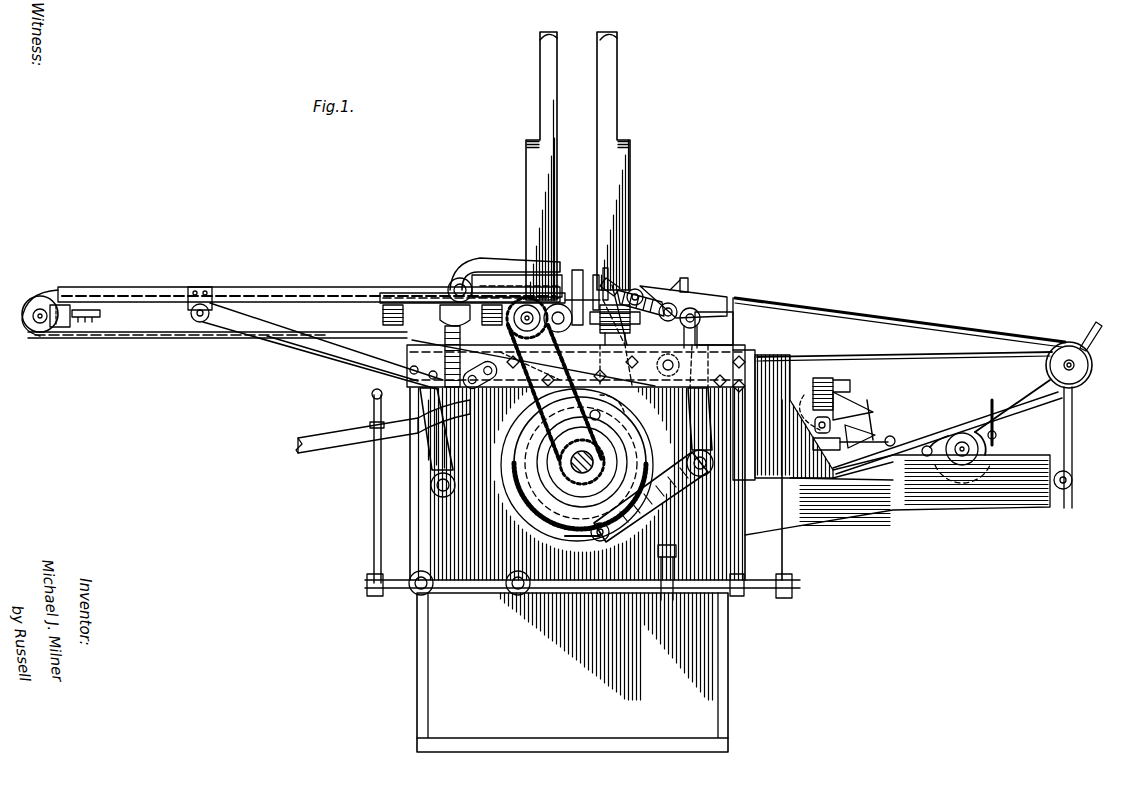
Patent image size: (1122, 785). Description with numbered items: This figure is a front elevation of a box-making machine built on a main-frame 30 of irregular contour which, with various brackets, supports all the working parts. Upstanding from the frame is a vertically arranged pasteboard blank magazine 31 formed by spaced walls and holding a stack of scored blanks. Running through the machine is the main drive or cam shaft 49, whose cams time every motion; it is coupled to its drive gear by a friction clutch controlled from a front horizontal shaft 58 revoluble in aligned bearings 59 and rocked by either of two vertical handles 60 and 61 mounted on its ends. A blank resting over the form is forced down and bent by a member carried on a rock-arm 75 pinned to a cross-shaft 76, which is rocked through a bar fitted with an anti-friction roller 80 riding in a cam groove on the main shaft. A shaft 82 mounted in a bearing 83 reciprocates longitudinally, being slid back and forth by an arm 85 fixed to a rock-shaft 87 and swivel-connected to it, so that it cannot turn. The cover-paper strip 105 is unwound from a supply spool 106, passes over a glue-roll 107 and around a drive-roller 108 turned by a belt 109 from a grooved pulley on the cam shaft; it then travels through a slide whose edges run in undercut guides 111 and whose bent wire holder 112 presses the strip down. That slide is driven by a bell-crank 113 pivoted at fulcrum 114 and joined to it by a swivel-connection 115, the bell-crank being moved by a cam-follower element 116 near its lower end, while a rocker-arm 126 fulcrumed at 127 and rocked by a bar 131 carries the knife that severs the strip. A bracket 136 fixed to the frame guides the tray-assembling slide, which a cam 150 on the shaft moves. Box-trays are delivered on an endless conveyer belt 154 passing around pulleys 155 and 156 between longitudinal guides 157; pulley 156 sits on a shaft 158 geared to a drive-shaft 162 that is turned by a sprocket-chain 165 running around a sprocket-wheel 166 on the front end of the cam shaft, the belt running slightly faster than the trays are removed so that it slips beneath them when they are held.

The main-frame 30 is at (577, 484).
The pasteboard blank magazine 31 is at (608, 170).
The main drive or cam shaft 49 is at (649, 568).
The front horizontal shaft 58 is at (572, 672).
The bearings 59 is at (420, 592).
The vertical handle 60 is at (372, 395).
The vertical handle 61 is at (805, 528).
The rock-arm 75 is at (478, 262).
The cross-shaft 76 is at (458, 280).
The anti-friction roller 80 is at (495, 300).
The shaft 82 is at (420, 305).
The bearing 83 is at (390, 305).
The arm 85 is at (440, 450).
The rock-shaft 87 is at (432, 486).
The cover-paper strip 105 is at (890, 318).
The supply-roll or spool 106 is at (840, 395).
The glue-roll 107 is at (960, 430).
The drive-roller 108 is at (1076, 372).
The belt 109 is at (856, 356).
The undercut guides 111 is at (725, 300).
The bent wire holder 112 is at (640, 298).
The bell-crank 113 is at (694, 412).
The fulcrum 114 is at (652, 496).
The swivel-connection 115 is at (748, 318).
The pin 116 is at (592, 540).
The rocker-arm 126 is at (618, 296).
The fulcrum 127 is at (700, 300).
The bar 131 is at (622, 321).
The bracket 136 is at (640, 377).
The cam 150 is at (552, 482).
The endless conveyer belt 154 is at (156, 338).
The roller or pulley 155 is at (36, 332).
The pulley 156 is at (578, 292).
The longitudinal guides or retainers 157 is at (158, 288).
The shaft 158 is at (565, 326).
The drive-shaft 162 is at (428, 410).
The sprocket-chain 165 is at (468, 410).
The sprocket-wheel 166 is at (572, 470).